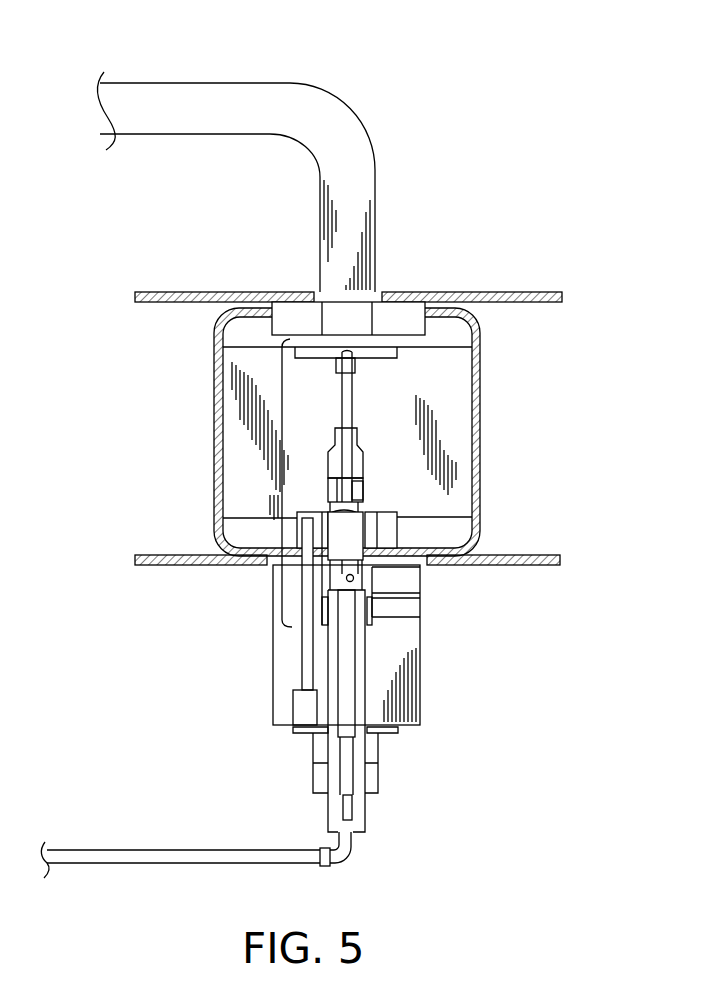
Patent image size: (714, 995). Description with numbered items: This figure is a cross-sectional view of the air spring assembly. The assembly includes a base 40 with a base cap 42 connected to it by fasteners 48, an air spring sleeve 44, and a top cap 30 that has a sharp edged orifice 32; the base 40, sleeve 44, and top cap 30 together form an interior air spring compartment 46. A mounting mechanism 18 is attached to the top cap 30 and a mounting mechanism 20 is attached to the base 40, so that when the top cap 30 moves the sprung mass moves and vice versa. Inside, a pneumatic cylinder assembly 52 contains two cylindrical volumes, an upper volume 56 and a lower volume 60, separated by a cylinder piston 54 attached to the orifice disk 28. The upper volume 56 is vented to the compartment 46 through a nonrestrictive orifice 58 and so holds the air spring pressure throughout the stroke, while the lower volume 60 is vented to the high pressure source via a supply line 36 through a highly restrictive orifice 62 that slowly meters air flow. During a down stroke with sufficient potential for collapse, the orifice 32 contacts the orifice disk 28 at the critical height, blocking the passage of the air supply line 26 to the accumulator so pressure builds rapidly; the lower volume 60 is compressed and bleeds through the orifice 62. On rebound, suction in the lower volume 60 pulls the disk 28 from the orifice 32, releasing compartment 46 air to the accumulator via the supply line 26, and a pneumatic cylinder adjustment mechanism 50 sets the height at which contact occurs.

The mounting mechanism 18 is at (515, 292).
The mounting mechanism 20 is at (172, 566).
The air supply line 26 is at (218, 82).
The orifice disk 28 is at (395, 358).
The top cap 30 is at (295, 303).
The orifice 32 is at (352, 322).
The supply line 36 is at (203, 850).
The base 40 is at (397, 657).
The base cap 42 is at (388, 527).
The air spring sleeve 44 is at (215, 400).
The interior air spring compartment 46 is at (400, 434).
The fastener 48 is at (298, 667).
The pneumatic cylinder adjustment mechanism 50 is at (368, 691).
The pneumatic cylinder assembly 52 is at (275, 479).
The cylinder piston 54 is at (367, 503).
The upper volume 56 is at (355, 488).
The nonrestrictive orifice 58 is at (367, 480).
The lower volume 60 is at (357, 558).
The restrictive orifice 62 is at (348, 600).